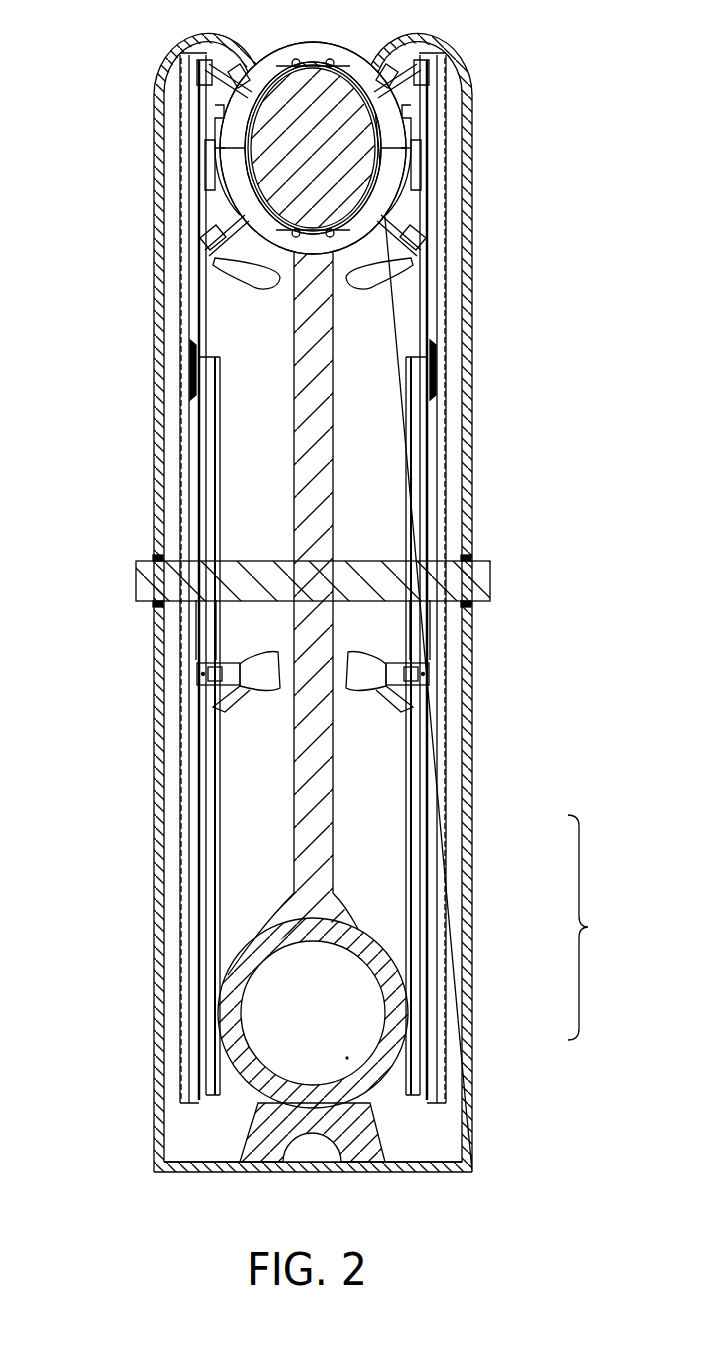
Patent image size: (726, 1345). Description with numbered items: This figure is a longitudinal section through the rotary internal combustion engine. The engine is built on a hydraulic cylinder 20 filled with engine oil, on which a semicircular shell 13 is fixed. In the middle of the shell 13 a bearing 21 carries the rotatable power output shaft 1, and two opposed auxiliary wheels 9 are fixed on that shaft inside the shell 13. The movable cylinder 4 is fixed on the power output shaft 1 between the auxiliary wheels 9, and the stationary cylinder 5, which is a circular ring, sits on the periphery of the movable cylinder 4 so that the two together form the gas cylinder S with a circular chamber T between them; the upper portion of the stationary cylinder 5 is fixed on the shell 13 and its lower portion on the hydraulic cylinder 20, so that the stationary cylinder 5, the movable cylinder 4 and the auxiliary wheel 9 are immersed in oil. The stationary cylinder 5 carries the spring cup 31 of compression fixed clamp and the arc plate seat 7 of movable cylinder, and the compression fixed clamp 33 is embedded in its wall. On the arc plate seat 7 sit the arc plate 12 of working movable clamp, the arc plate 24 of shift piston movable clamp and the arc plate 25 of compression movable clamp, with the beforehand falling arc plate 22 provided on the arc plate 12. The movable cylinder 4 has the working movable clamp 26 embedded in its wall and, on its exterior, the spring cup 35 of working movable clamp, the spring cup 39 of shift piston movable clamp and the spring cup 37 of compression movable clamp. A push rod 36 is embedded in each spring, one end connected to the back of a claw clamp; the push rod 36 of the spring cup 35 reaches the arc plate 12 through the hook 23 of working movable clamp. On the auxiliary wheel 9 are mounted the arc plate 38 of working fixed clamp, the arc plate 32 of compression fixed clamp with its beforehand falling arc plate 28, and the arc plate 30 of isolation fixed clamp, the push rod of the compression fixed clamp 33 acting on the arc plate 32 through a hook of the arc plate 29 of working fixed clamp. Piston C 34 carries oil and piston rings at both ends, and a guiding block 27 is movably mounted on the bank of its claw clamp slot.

The power output shaft 1 is at (492, 572).
The movable cylinder 4 is at (335, 833).
The stationary cylinder 5 is at (395, 1028).
The arc plate seat of movable cylinder 7 is at (400, 168).
The auxiliary wheel 9 is at (180, 782).
The arc plate of working movable clamp 12 is at (188, 331).
The shell 13 is at (472, 735).
The hydraulic cylinder 20 is at (155, 1033).
The bearing 21 is at (157, 557).
The beforehand falling arc plate of working movable clamp 22 is at (187, 383).
The hook of working movable clamp 23 is at (222, 252).
The arc plate of shift piston movable clamp 24 is at (210, 237).
The arc plate of compression movable clamp 25 is at (190, 218).
The working movable clamp 26 is at (217, 185).
The guiding block 27 is at (232, 150).
The beforehand falling arc plate of compression fixed clamp 28 is at (197, 93).
The arc plate of working fixed clamp 29 is at (195, 66).
The arc plate of isolation fixed clamp 30 is at (440, 57).
The spring cup of compression fixed clamp 31 is at (410, 100).
The arc plate of compression fixed clamp 32 is at (388, 95).
The compression fixed clamp 33 is at (325, 120).
The piston C 34 is at (420, 175).
The spring cup of working movable clamp 35 is at (383, 228).
The push rod 36 is at (412, 254).
The spring cup of compression movable clamp 37 is at (418, 265).
The arc plate of working fixed clamp 38 is at (420, 625).
The spring cup of shift piston movable clamp 39 is at (425, 678).
The gas cylinder S is at (587, 927).
The circular chamber T is at (347, 1058).